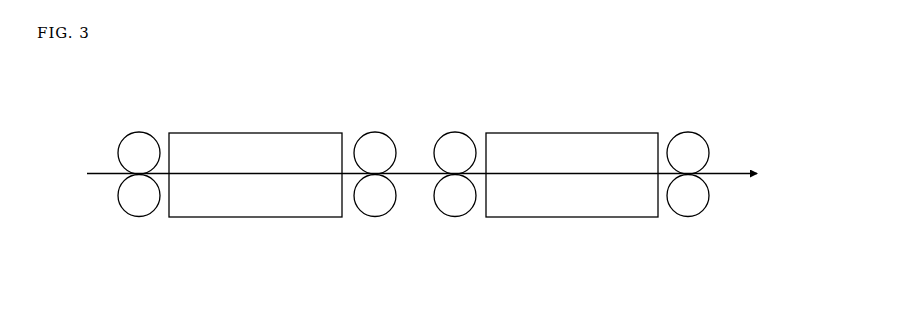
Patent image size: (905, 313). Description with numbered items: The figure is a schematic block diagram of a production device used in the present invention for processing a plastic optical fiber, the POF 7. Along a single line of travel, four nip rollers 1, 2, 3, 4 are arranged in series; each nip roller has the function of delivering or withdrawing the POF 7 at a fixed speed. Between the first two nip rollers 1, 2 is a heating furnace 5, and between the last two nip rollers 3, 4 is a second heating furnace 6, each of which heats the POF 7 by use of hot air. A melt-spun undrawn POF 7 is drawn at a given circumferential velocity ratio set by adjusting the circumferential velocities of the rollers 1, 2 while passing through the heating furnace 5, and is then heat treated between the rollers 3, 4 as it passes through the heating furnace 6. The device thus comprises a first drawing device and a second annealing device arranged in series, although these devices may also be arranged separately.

The nip roller 1 is at (139, 132).
The nip roller 2 is at (374, 132).
The nip roller 3 is at (455, 132).
The nip roller 4 is at (687, 132).
The heating furnace 5 is at (251, 133).
The heating furnace 6 is at (568, 133).
The POF 7 is at (727, 171).